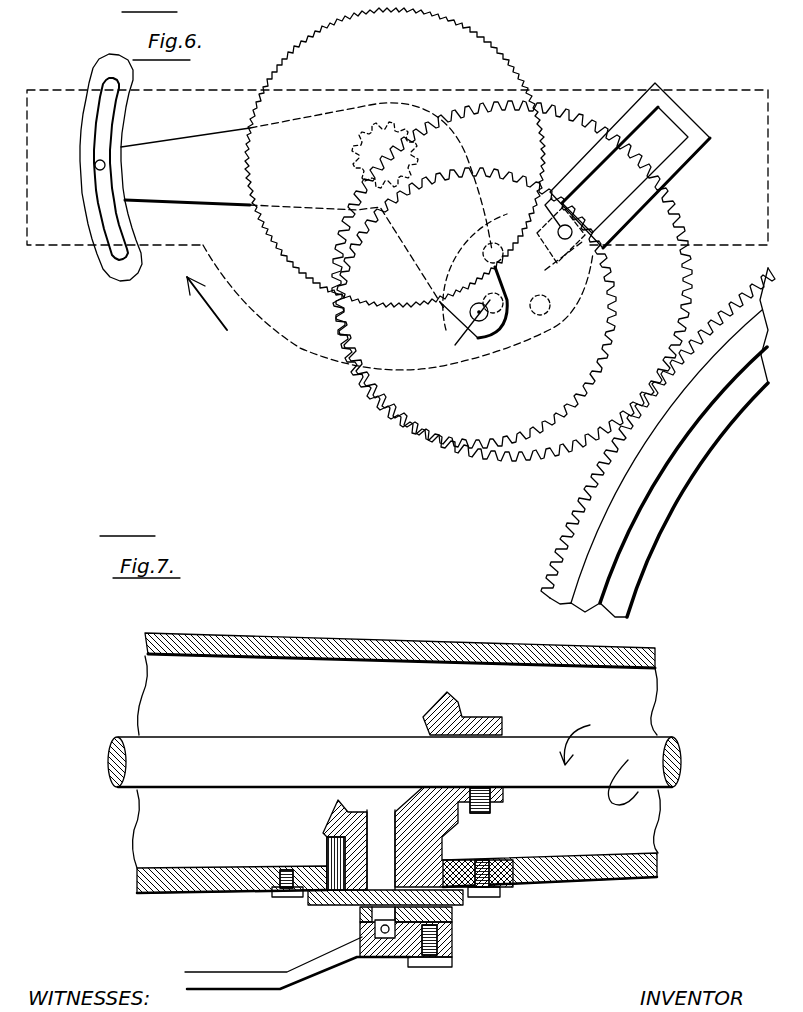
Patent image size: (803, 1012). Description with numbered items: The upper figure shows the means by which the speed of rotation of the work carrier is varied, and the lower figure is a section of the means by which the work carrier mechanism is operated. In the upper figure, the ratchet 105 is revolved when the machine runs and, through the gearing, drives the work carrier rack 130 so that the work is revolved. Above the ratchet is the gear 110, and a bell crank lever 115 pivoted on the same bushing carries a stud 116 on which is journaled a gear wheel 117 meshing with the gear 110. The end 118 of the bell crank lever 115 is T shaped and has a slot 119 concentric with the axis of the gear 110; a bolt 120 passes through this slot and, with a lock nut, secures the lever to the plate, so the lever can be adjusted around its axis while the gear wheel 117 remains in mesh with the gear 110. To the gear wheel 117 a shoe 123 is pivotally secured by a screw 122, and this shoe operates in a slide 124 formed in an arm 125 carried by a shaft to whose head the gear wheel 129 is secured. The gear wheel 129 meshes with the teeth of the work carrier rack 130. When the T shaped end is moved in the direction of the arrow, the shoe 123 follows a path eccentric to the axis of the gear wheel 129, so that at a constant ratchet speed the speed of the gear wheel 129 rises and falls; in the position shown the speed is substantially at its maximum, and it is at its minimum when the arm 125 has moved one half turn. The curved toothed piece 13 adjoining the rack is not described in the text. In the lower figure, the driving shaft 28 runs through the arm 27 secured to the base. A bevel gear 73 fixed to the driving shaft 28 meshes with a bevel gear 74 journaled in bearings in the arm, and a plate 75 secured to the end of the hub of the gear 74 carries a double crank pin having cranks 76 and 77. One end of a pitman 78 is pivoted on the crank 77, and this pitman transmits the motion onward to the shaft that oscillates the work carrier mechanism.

In FIG. 6, the ratchet 105 is at (395, 157).
In FIG. 6, the gear 110 is at (358, 160).
In FIG. 6, the bell crank lever 115 is at (306, 206).
In FIG. 6, the stud 116 is at (495, 343).
In FIG. 6, the gear wheel 117 is at (512, 281).
In FIG. 6, the end of the bell crank lever 118 is at (87, 135).
In FIG. 6, the slot 119 is at (113, 250).
In FIG. 6, the bolt 120 is at (95, 169).
In FIG. 6, the screw 122 is at (573, 235).
In FIG. 6, the shoe 123 is at (581, 224).
In FIG. 6, the slide 124 is at (672, 152).
In FIG. 6, the arm 125 is at (677, 100).
In FIG. 6, the gear wheel 129 is at (506, 308).
In FIG. 6, the work carrier rack 130 is at (610, 503).
In FIG. 6, the ring 13 is at (640, 559).
In FIG. 7, the arm 27 is at (238, 657).
In FIG. 7, the driving shaft 28 is at (394, 762).
In FIG. 7, the bevel gear 73 is at (462, 718).
In FIG. 7, the bevel gear 74 is at (335, 822).
In FIG. 7, the plate 75 is at (462, 905).
In FIG. 7, the crank 76 is at (357, 917).
In FIG. 7, the crank 77 is at (452, 950).
In FIG. 7, the pitman 78 is at (297, 973).